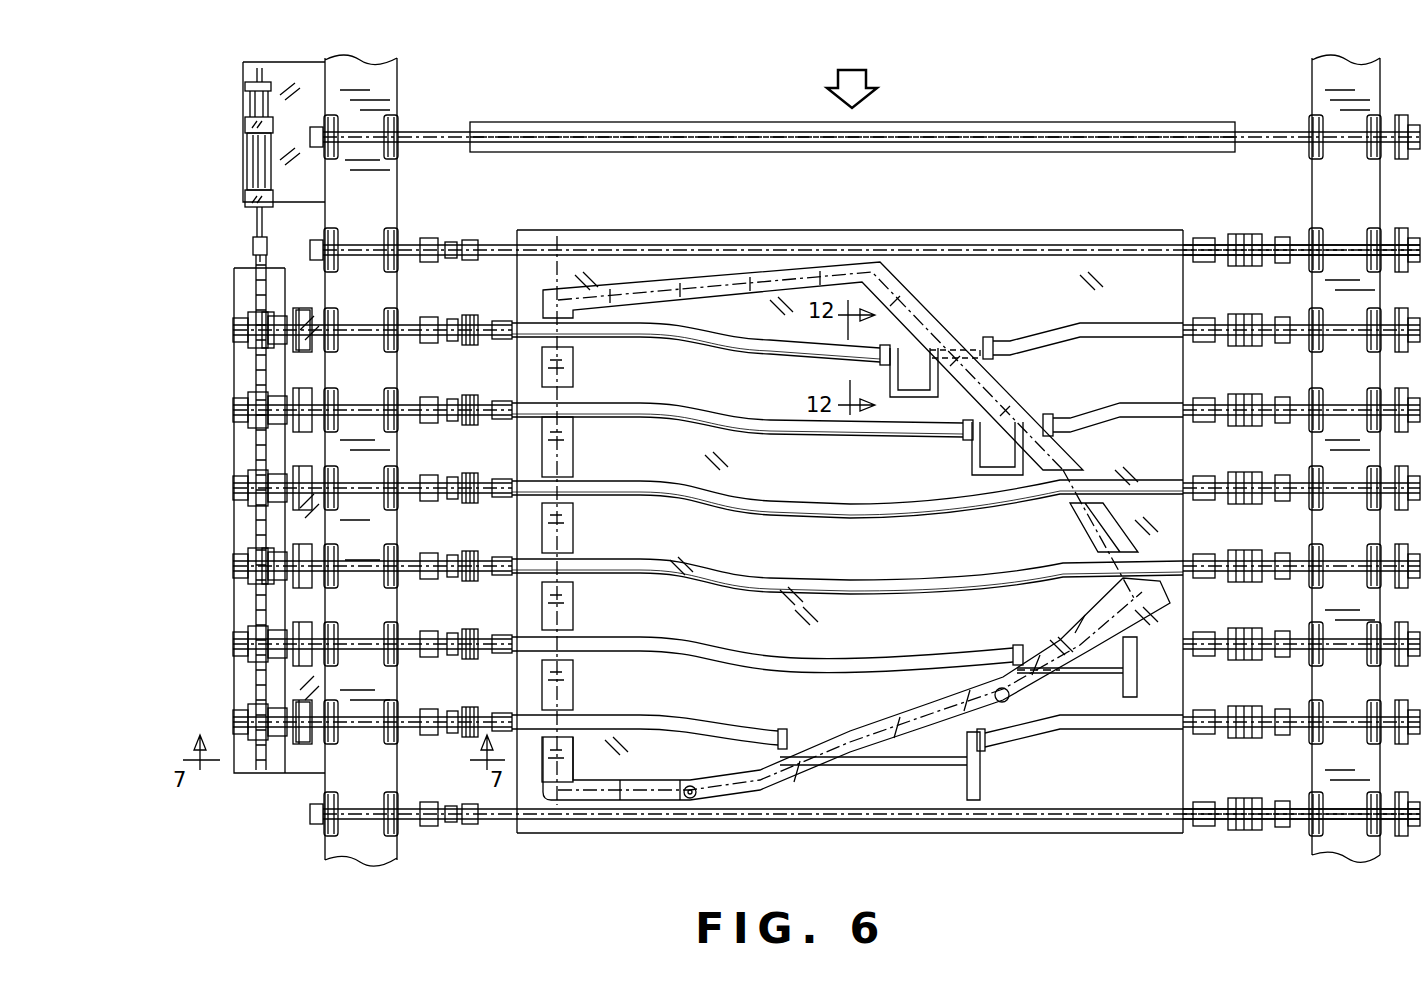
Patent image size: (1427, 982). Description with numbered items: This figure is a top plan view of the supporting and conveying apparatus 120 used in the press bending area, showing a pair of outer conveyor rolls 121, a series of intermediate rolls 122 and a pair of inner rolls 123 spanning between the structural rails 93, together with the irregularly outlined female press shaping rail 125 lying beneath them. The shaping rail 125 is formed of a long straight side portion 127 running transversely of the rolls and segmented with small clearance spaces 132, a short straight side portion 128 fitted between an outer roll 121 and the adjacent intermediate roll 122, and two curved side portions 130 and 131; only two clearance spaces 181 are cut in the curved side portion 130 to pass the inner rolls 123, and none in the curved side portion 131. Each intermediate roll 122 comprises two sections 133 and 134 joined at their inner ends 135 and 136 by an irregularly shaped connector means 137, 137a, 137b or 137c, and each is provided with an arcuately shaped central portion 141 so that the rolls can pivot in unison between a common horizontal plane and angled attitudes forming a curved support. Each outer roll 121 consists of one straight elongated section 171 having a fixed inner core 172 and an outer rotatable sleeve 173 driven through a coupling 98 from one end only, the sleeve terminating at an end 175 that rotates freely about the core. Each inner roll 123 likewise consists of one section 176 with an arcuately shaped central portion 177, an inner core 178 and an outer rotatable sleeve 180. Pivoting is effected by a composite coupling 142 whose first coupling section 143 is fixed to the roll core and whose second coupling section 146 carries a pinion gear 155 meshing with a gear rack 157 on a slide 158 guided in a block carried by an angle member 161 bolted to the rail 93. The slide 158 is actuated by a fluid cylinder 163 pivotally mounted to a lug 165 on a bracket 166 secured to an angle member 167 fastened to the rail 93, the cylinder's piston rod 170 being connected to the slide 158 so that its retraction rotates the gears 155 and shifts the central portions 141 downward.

The rail 93 is at (385, 80).
The coupling 98 is at (1258, 222).
The supporting and conveying apparatus 120 is at (870, 800).
The outer conveyor rolls 121 is at (660, 232).
The intermediate rolls 122 is at (1085, 322).
The inner rolls 123 is at (688, 517).
The female press shaping rail 125 is at (900, 262).
The long straight side portion 127 is at (548, 795).
The short straight side portion 128 is at (790, 265).
The curved side portion 130 is at (1010, 392).
The curved side portion 131 is at (775, 778).
The clearance spaces 132 is at (612, 445).
The roll section 133 is at (622, 350).
The roll section 134 is at (1130, 338).
The inner end 135 is at (895, 348).
The inner end 136 is at (985, 340).
The connector means 137 is at (900, 400).
The connector means 137a is at (965, 458).
The connector means 137b is at (1095, 688).
The connector means 137c is at (930, 768).
The arcuately shaped central portions 141 is at (780, 347).
The composite coupling 142 is at (245, 400).
The first coupling section 143 is at (290, 455).
The second coupling section 146 is at (236, 325).
The pinion gear 155 is at (262, 478).
The gear rack 157 is at (270, 285).
The slide 158 is at (250, 263).
The angle member 161 is at (307, 773).
The fluid cylinder 163 is at (252, 150).
The lug 165 is at (250, 101).
The bracket 166 is at (250, 82).
The angle member 167 is at (298, 70).
The piston rod 170 is at (257, 212).
The elongated section 171 is at (757, 232).
The inner core 172 is at (440, 240).
The outer rotatable sleeve 173 is at (578, 244).
The end 175 is at (450, 262).
The section 176 is at (604, 497).
The arcuately shaped central portions 177 is at (895, 583).
The inner core 178 is at (450, 490).
The outer rotatable sleeve 180 is at (500, 562).
The clearance spaces 181 is at (1098, 552).